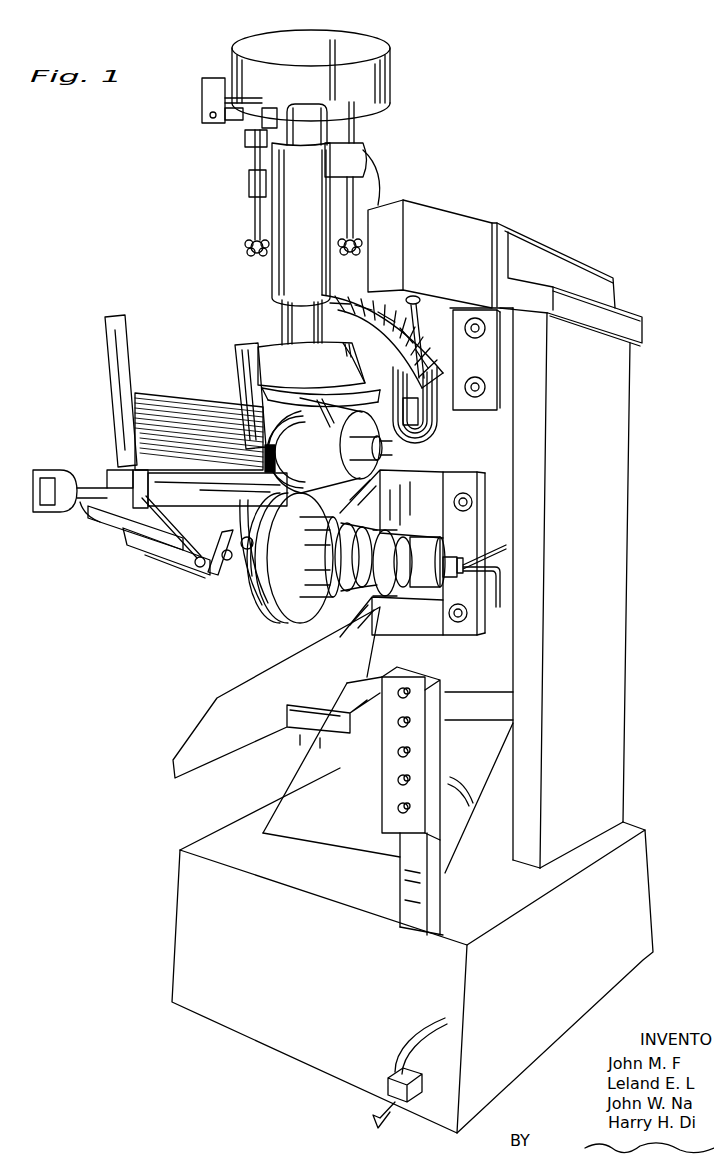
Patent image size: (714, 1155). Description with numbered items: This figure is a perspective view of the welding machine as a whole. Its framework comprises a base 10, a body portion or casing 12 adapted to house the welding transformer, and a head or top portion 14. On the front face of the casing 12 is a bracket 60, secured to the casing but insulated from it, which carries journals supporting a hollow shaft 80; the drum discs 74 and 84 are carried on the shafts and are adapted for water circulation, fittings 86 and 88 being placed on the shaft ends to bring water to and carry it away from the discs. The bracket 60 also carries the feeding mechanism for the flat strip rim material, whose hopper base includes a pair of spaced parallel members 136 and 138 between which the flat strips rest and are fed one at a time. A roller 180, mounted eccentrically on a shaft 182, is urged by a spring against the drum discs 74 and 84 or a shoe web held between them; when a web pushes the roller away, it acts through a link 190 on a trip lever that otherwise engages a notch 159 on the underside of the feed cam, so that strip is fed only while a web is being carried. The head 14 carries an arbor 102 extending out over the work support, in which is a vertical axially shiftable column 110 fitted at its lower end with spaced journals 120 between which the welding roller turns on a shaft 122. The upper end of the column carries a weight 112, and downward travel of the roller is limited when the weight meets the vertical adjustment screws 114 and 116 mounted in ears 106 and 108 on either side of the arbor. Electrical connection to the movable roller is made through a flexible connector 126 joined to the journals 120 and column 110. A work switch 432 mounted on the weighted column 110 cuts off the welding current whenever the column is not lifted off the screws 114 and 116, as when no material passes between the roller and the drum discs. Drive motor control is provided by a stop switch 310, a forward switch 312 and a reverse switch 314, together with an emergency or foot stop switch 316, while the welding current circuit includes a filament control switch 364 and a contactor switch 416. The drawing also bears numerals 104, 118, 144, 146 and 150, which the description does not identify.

The base 10 is at (213, 877).
The casing 12 is at (613, 503).
The head 14 is at (573, 277).
The bracket 60 is at (430, 503).
The drum disc 74 is at (250, 600).
The hollow shaft 80 is at (423, 553).
The drum disc 84 is at (280, 620).
The fitting 86 is at (505, 557).
The fitting 88 is at (505, 597).
The arbor 102 is at (358, 277).
The column post 104 is at (283, 267).
The ear 106 is at (250, 183).
The ear 108 is at (362, 159).
The column 110 is at (357, 138).
The weight 112 is at (393, 66).
The vertical adjustment screw 114 is at (252, 220).
The vertical adjustment screw 116 is at (357, 195).
The clamp collar 118 is at (268, 340).
The journals 120 is at (329, 445).
The shaft 122 is at (385, 455).
The flexible connector 126 is at (440, 422).
The parallel member 136 is at (110, 473).
The parallel member 138 is at (167, 497).
The upright bar 144 is at (107, 340).
The bar 146 is at (236, 350).
The clamp 150 is at (87, 507).
The notch 159 is at (123, 533).
The roller 180 is at (240, 585).
The shaft 182 is at (152, 562).
The link 190 is at (210, 568).
The stop switch 310 is at (400, 757).
The forward switch 312 is at (398, 700).
The reverse switch 314 is at (398, 727).
The emergency or foot stop switch 316 is at (395, 1093).
The filament control switch 364 is at (397, 813).
The contactor switch 416 is at (400, 783).
The work switch 432 is at (205, 88).